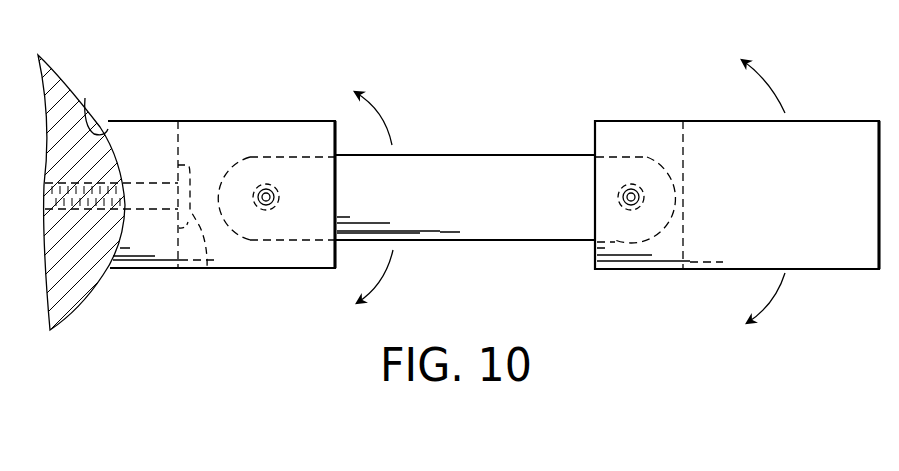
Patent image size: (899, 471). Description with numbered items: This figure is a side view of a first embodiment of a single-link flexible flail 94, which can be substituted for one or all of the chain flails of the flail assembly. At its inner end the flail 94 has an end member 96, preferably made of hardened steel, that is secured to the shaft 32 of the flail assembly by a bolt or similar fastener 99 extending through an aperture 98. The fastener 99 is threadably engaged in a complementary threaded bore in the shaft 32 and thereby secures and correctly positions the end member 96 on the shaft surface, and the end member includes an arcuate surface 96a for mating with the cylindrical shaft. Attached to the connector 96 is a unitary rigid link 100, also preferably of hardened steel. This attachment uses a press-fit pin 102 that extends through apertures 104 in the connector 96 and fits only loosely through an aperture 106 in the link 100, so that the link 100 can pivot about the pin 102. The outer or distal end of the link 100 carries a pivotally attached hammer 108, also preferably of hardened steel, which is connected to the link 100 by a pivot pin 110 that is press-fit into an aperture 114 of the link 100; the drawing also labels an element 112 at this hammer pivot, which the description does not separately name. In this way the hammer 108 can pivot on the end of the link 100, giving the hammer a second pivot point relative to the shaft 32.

The shaft 32 is at (68, 323).
The flexible flail 94 is at (176, 286).
The end member 96 is at (200, 143).
The arcuate surface 96a is at (85, 98).
The aperture 98 is at (148, 182).
The fastener 99 is at (207, 270).
The unitary rigid link 100 is at (435, 185).
The press-fit pin 102 is at (280, 197).
The apertures 104 is at (266, 192).
The aperture 106 is at (258, 230).
The hammer 108 is at (812, 153).
The pivot pin 110 is at (641, 184).
The pivot pin 112 is at (623, 197).
The aperture 114 is at (627, 184).